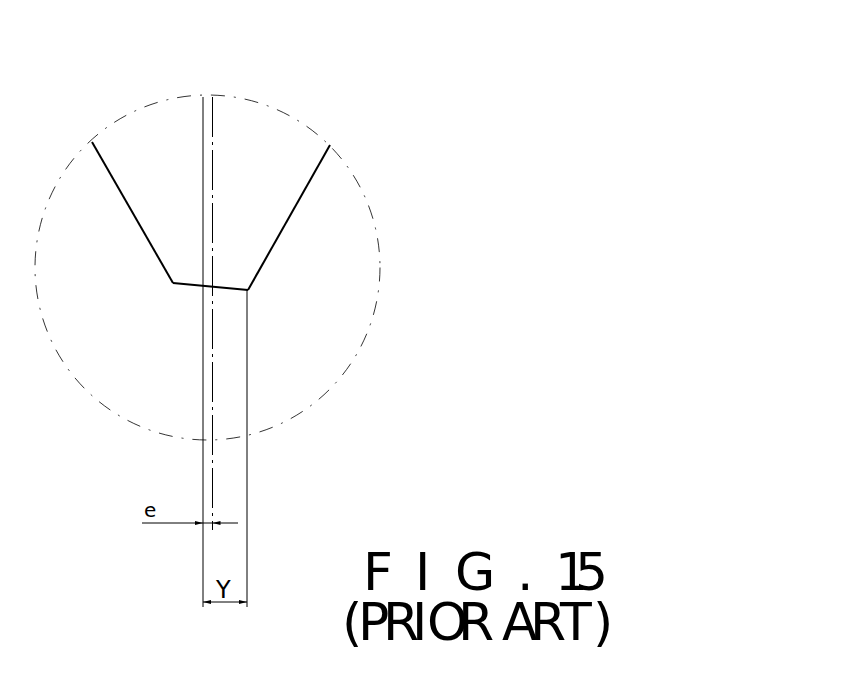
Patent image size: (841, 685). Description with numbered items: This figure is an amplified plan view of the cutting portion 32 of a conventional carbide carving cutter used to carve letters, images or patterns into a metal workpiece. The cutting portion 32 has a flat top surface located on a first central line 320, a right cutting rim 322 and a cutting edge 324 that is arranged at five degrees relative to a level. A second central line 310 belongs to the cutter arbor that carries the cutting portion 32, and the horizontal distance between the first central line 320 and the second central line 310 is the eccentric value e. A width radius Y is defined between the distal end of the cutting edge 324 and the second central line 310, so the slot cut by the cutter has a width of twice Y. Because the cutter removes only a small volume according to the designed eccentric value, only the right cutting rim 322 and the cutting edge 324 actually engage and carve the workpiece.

The cutting portion 32 is at (277, 177).
The second central line 310 is at (203, 140).
The first central line 320 is at (212, 197).
The right cutting rim 322 is at (278, 239).
The cutting edge 324 is at (193, 287).